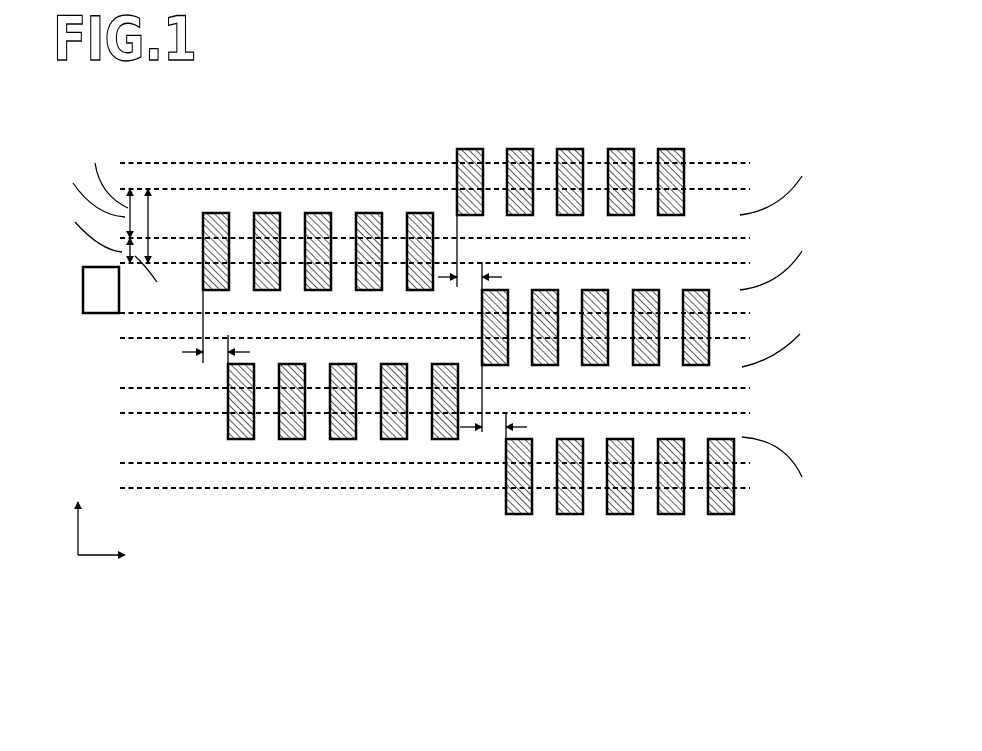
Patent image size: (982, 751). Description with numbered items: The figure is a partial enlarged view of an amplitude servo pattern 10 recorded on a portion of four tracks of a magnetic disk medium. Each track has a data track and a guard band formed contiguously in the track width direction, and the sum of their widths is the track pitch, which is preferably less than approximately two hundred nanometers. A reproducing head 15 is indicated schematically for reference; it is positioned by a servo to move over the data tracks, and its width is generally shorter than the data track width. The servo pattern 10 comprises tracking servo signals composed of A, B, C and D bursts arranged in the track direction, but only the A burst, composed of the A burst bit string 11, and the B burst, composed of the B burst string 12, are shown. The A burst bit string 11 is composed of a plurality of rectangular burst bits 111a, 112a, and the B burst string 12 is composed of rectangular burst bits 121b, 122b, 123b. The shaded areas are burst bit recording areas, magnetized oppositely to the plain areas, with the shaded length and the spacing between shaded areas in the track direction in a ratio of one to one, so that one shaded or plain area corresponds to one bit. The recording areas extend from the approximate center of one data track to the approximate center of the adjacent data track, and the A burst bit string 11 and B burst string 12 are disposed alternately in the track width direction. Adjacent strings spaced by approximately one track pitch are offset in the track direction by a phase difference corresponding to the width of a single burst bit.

The amplitude servo pattern 10 is at (785, 98).
The A burst bit string 11 is at (457, 135).
The B burst string 12 is at (708, 113).
The reproducing head 15 is at (103, 298).
The rectangular burst bit 111a is at (215, 213).
The rectangular burst bit 112a is at (292, 437).
The rectangular burst bit 121b is at (512, 150).
The rectangular burst bit 122b is at (653, 366).
The rectangular burst bit 123b is at (572, 510).